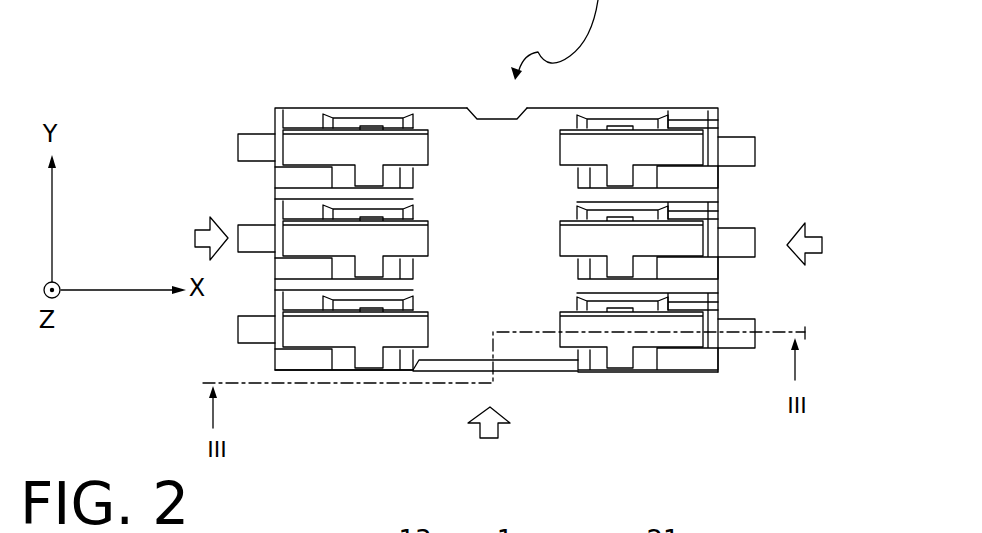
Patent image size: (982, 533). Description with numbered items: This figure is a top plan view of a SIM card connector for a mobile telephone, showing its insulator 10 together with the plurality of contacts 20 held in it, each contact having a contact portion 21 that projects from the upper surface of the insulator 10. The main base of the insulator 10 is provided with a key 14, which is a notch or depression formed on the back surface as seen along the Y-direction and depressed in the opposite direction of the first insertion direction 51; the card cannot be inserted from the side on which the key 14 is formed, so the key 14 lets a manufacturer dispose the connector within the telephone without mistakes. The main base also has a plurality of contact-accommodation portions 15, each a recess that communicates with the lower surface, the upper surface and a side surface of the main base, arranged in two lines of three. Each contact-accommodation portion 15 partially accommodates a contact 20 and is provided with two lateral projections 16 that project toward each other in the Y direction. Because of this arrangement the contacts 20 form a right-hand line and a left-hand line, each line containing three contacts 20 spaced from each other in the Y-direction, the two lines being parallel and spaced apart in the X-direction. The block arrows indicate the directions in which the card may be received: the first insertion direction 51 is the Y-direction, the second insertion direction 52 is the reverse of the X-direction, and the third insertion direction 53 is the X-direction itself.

The insulator 10 is at (618, 108).
The key 14 is at (481, 117).
The contact-accommodation portion 15 is at (643, 365).
The lateral projection 16 is at (695, 300).
The contact 20 is at (720, 138).
The contact portion 21 is at (563, 158).
The first insertion direction 51 is at (499, 431).
The second insertion direction 52 is at (806, 230).
The third insertion direction 53 is at (205, 230).